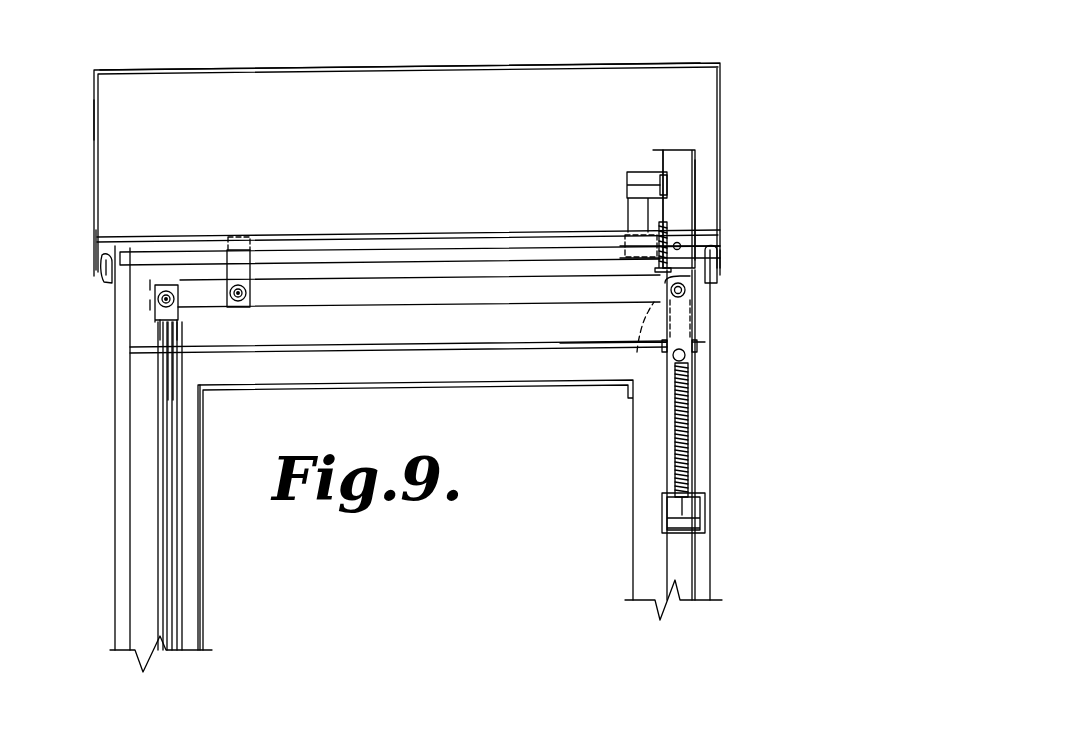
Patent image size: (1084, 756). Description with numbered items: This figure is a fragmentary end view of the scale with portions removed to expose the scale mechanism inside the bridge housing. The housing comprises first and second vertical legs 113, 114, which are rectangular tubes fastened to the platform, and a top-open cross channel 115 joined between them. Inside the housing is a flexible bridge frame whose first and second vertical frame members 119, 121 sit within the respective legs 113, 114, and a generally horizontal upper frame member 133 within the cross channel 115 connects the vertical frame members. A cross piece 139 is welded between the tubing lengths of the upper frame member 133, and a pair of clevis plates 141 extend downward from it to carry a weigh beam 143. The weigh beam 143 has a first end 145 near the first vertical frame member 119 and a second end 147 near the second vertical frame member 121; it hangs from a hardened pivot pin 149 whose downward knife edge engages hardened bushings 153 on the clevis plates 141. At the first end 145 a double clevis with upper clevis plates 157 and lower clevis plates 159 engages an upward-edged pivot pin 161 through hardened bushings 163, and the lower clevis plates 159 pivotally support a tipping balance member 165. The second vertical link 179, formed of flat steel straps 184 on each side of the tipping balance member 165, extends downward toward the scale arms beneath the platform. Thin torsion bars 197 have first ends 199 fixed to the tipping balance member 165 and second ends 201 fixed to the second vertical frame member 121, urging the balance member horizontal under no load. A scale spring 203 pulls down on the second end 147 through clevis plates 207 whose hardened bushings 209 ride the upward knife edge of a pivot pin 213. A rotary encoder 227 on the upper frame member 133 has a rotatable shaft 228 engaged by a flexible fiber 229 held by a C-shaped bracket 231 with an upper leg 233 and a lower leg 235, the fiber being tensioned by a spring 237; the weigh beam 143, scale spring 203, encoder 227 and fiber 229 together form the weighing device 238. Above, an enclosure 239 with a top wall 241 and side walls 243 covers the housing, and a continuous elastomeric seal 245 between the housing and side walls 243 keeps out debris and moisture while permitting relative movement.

The first vertical leg 113 is at (206, 610).
The second vertical leg 114 is at (632, 584).
The cross channel 115 is at (508, 385).
The first vertical frame member 119 is at (126, 565).
The second vertical frame member 121 is at (706, 564).
The upper frame member 133 is at (412, 244).
The cross piece 139 is at (250, 236).
The clevis plates 141 is at (258, 282).
The weigh beam 143 is at (418, 293).
The first end 145 is at (148, 292).
The second end 147 is at (718, 274).
The pivot pin 149 is at (244, 298).
The hardened bushings 153 is at (248, 300).
The upper clevis plates 157 is at (156, 308).
The lower clevis plates 159 is at (162, 340).
The pivot pin 161 is at (170, 290).
The hardened bushings 163 is at (172, 306).
The tipping balance member 165 is at (166, 380).
The second vertical link 179 is at (180, 562).
The flat steel straps 184 is at (170, 472).
The torsion bars 197 is at (474, 346).
The first end 199 is at (192, 356).
The second end 201 is at (698, 350).
The scale spring 203 is at (690, 428).
The clevis plates 207 is at (696, 316).
The hardened bushings 209 is at (692, 300).
The pivot pin 213 is at (636, 350).
The rotary encoder 227 is at (650, 204).
The rotatable shaft 228 is at (634, 172).
The flexible fiber 229 is at (662, 164).
The C-shaped bracket 231 is at (700, 168).
The upper leg 233 is at (666, 148).
The lower leg 235 is at (662, 274).
The spring 237 is at (668, 224).
The weighing device 238 is at (700, 134).
The enclosure 239 is at (345, 64).
The top wall 241 is at (220, 68).
The side walls 243 is at (95, 124).
The elastomeric seal 245 is at (100, 240).